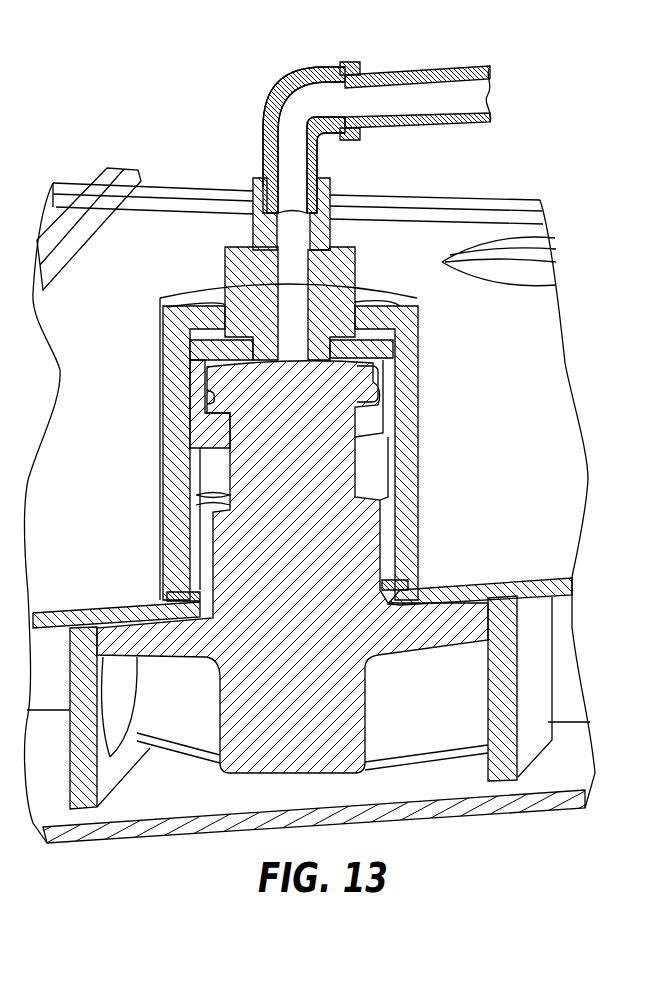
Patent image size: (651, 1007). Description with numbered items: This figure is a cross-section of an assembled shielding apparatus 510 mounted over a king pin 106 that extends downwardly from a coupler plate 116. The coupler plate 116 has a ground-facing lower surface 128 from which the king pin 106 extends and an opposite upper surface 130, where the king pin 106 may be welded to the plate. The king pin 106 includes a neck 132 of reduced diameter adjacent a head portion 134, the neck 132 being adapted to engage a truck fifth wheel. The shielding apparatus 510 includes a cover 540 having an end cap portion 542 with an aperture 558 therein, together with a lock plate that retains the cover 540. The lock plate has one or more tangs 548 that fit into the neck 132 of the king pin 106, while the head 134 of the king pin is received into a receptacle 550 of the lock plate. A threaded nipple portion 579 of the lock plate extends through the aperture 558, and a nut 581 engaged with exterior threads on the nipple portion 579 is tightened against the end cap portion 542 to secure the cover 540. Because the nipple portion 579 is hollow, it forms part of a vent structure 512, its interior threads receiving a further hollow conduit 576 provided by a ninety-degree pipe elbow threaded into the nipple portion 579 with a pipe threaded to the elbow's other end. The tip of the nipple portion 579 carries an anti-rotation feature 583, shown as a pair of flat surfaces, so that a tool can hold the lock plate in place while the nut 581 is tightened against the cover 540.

The king pin 106 is at (307, 643).
The coupler plate 116 is at (538, 417).
The lower surface 128 is at (527, 578).
The upper surface 130 is at (533, 603).
The neck 132 is at (356, 468).
The head portion 134 is at (368, 387).
The shielding apparatus 510 is at (542, 363).
The vent structure 512 is at (259, 107).
The cover 540 is at (178, 431).
The end cap portion 542 is at (199, 290).
The tangs 548 is at (220, 453).
The receptacle 550 is at (206, 389).
The aperture 558 is at (328, 310).
The hollow conduit 576 is at (378, 66).
The nipple portion 579 is at (200, 329).
The nut 581 is at (246, 247).
The anti-rotation feature 583 is at (251, 185).